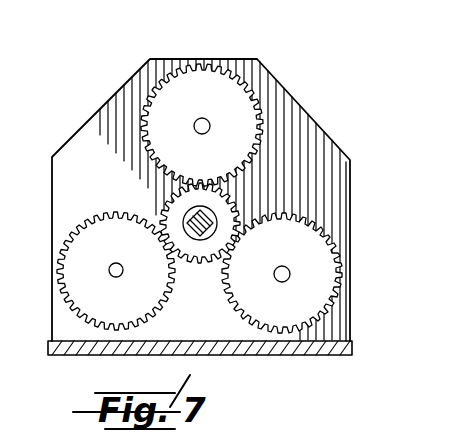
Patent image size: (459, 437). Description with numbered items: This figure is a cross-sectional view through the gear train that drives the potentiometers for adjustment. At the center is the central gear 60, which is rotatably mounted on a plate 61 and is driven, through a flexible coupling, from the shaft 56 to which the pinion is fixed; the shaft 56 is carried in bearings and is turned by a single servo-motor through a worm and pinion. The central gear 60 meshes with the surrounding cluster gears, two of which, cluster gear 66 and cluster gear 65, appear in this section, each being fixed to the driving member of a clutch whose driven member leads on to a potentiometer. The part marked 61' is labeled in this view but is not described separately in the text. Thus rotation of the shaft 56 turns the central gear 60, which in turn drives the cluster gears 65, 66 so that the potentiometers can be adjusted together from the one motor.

The plate 61 is at (206, 207).
The gear 61' is at (116, 261).
The cluster gear 66 is at (206, 70).
The cluster gear 65 is at (328, 275).
The central gear 60 is at (192, 258).
The shaft 56 is at (184, 214).